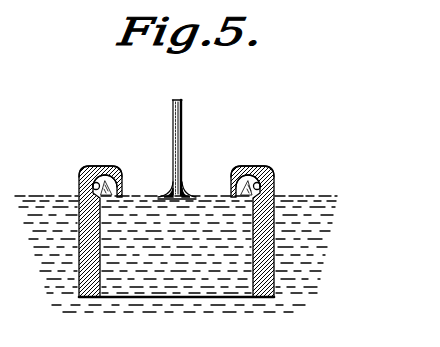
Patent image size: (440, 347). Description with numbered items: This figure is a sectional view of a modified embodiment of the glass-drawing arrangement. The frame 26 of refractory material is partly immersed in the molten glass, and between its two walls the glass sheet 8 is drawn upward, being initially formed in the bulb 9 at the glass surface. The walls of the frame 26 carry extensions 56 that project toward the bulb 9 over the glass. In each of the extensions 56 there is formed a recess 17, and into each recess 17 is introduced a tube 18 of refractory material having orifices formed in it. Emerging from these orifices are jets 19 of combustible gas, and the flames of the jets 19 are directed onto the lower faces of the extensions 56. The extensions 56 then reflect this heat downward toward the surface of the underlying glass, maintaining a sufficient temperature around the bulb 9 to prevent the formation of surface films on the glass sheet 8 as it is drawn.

The glass sheet 8 is at (183, 122).
The bulb 9 is at (183, 195).
The recess 17 is at (122, 176).
The tube 18 is at (274, 187).
The jets 19 is at (237, 192).
The frame 26 is at (80, 228).
The extensions 56 is at (100, 166).